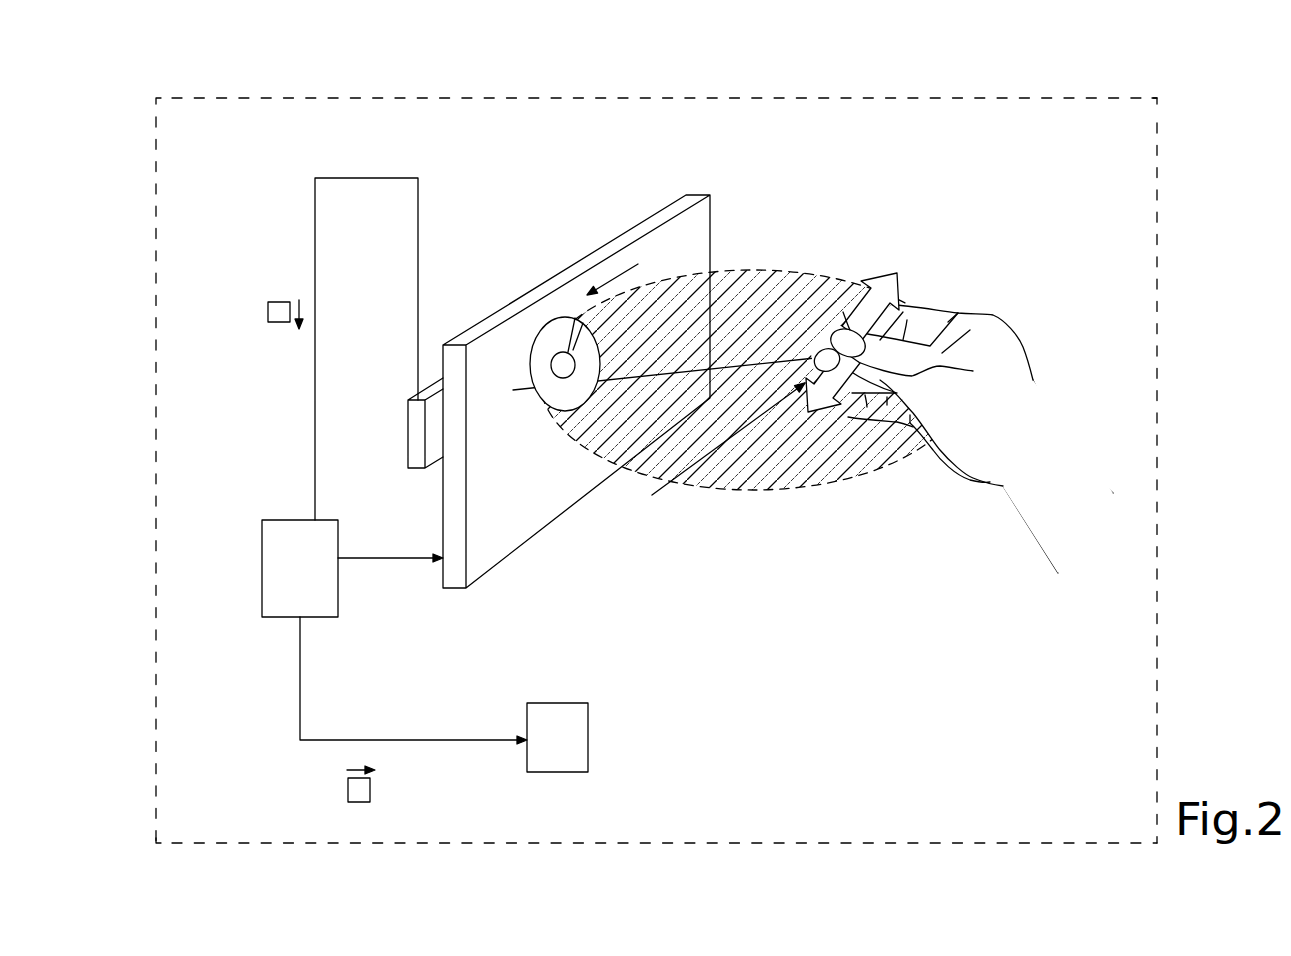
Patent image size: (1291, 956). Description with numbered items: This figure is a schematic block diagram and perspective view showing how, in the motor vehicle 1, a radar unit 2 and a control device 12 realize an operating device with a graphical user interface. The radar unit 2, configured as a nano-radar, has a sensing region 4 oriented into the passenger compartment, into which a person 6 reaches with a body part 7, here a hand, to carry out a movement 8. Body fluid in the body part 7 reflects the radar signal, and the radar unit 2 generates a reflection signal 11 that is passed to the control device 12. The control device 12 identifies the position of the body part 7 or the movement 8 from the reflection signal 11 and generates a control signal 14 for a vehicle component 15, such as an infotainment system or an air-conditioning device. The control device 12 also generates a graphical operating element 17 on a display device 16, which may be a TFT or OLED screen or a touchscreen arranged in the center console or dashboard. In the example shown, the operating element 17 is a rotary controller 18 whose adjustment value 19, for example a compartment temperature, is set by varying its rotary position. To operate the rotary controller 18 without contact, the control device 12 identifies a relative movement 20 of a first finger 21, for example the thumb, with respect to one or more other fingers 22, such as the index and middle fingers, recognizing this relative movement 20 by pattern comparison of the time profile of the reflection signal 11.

The motor vehicle 1 is at (267, 98).
The radar unit 2 is at (407, 423).
The sensing region 4 is at (843, 312).
The person 6 is at (1112, 493).
The body part 7 is at (1033, 379).
The movement 8 is at (905, 276).
The reflection signal 11 is at (268, 309).
The control device 12 is at (262, 562).
The control signal 14 is at (370, 793).
The vehicle component 15 is at (588, 733).
The display device 16 is at (697, 196).
The graphical operating element 17 is at (557, 310).
The rotary controller 18 is at (628, 269).
The adjustment value 19 is at (573, 494).
The relative movement 20 is at (739, 397).
The first finger 21 is at (958, 313).
The other fingers 22 is at (845, 328).